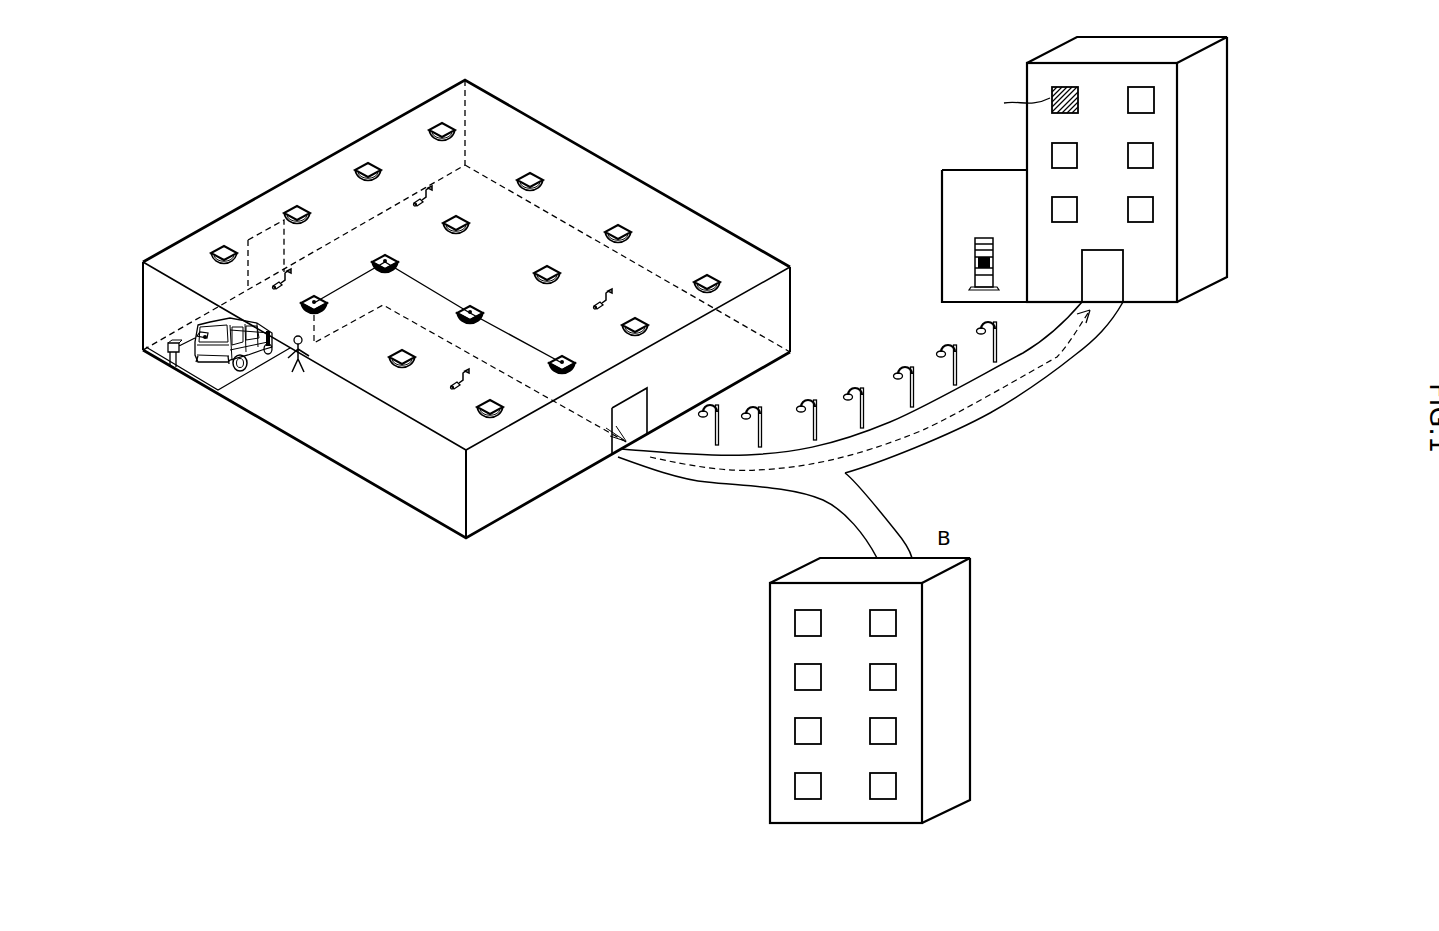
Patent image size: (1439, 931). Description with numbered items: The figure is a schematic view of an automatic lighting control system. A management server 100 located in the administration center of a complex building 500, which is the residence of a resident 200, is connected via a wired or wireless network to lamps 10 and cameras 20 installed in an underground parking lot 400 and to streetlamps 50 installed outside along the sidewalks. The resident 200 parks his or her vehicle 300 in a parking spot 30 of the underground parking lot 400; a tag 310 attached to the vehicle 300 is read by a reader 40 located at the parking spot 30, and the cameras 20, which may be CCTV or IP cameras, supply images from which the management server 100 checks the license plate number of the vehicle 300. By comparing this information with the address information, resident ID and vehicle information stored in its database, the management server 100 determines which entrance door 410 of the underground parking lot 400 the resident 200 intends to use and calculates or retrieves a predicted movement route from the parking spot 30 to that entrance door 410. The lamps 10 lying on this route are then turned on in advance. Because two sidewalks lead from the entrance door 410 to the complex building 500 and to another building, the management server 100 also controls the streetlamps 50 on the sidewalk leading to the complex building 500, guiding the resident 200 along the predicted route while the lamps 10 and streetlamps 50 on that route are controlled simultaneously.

The lamp 10 is at (462, 226).
The camera 20 is at (423, 207).
The parking spot 30 is at (270, 332).
The reader 40 is at (175, 368).
The streetlamp 50 is at (813, 398).
The management server 100 is at (983, 237).
The resident 200 is at (298, 372).
The vehicle 300 is at (240, 368).
The tag 310 is at (195, 336).
The underground parking lot 400 is at (542, 122).
The entrance door 410 is at (265, 230).
The complex building 500 is at (1227, 113).